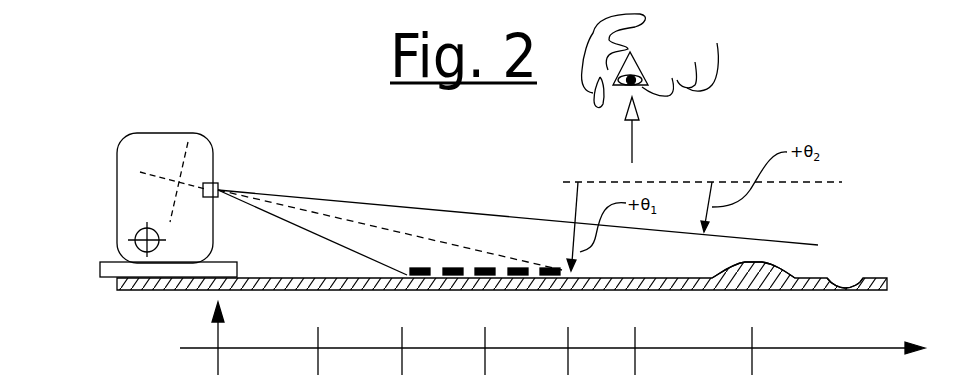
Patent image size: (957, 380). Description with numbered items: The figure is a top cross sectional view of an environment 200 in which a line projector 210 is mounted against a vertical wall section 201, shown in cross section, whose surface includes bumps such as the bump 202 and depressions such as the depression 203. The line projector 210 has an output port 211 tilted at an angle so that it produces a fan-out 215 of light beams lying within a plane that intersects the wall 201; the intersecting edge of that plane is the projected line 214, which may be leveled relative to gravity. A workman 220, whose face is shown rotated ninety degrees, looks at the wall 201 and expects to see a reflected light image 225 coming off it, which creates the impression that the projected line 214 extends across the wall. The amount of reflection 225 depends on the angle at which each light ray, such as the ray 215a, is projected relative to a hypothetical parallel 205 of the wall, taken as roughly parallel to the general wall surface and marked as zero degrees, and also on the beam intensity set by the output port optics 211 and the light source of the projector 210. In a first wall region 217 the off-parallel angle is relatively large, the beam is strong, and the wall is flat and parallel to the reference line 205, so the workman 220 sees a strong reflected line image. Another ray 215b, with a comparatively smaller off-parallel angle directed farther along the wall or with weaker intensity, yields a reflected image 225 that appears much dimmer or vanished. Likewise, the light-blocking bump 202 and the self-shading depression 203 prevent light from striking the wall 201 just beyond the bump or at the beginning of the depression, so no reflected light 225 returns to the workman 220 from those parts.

The environment 200 is at (925, 109).
The vertical wall section 201 is at (668, 293).
The bump 202 is at (732, 262).
The depression 203 is at (850, 277).
The hypothetical parallel 205 is at (733, 172).
The line projector 210 is at (117, 162).
The output port 211 is at (224, 183).
The projected line 214 is at (411, 269).
The fan-out 215 is at (302, 197).
The light ray 215a is at (458, 246).
The light ray 215b is at (758, 228).
The first wall region 217 is at (545, 198).
The workman 220 is at (723, 53).
The reflected light image 225 is at (636, 133).